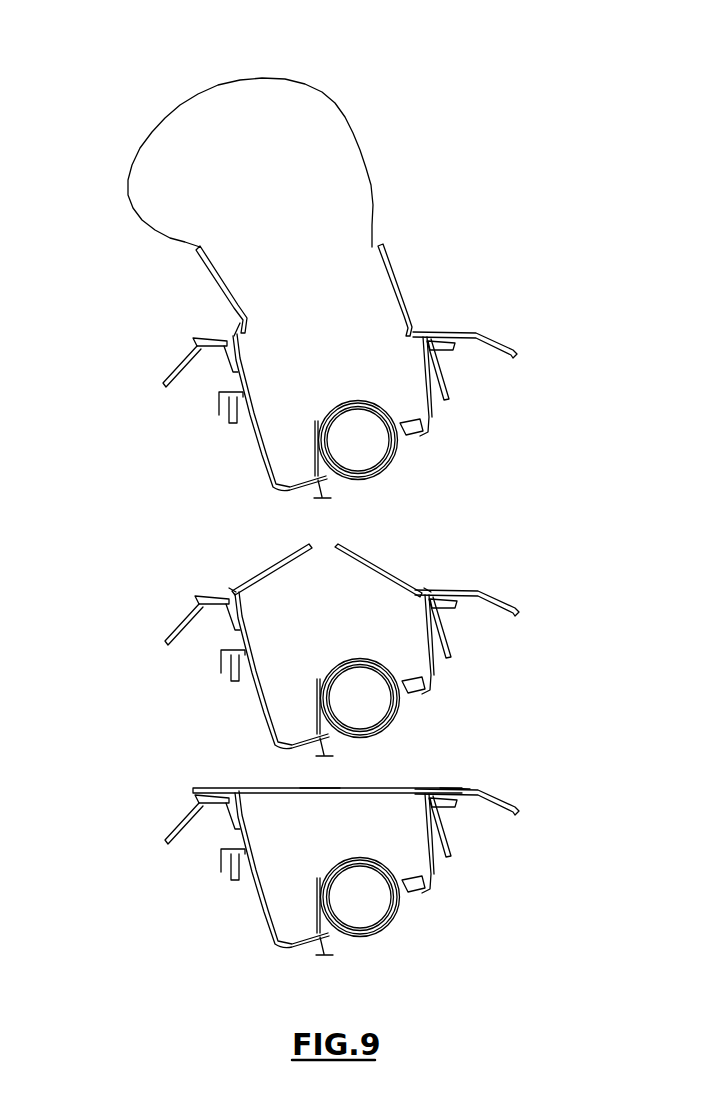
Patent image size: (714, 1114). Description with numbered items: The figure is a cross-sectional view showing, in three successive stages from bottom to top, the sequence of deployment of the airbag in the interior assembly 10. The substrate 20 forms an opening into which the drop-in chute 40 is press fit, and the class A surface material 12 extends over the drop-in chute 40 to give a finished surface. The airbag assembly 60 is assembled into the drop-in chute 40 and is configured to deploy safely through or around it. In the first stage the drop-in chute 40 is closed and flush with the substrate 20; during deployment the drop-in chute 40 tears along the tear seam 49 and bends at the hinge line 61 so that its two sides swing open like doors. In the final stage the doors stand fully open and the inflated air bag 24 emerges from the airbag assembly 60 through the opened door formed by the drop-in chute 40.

The interior assembly 10 is at (318, 501).
The class A surface material 12 is at (463, 787).
The substrate 20 is at (183, 373).
The opening 24 is at (330, 97).
The drop-in chute 40 is at (390, 260).
The tear seam 49 is at (322, 789).
The airbag assembly 60 is at (366, 307).
The hinge line 61 is at (230, 587).